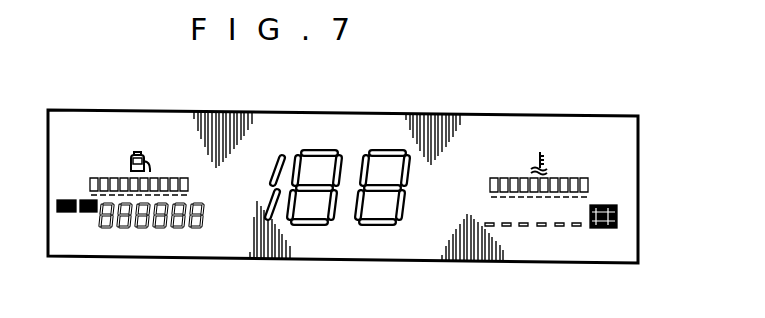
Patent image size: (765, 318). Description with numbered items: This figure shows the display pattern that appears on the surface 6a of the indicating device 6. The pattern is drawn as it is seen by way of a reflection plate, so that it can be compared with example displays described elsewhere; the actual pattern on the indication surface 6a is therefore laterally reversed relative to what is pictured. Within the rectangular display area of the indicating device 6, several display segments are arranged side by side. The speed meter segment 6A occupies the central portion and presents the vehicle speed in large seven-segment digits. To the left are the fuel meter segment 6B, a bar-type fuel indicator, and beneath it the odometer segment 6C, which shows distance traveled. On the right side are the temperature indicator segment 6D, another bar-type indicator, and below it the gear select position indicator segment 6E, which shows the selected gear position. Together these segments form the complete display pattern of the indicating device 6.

The indicating device 6 is at (637, 197).
The surface of the indicating device 6a is at (626, 139).
The speed meter segment 6A is at (390, 155).
The fuel meter segment 6B is at (158, 176).
The odometer segment 6C is at (162, 222).
The temperature indicator segment 6D is at (557, 180).
The gear select position indicator segment 6E is at (545, 228).